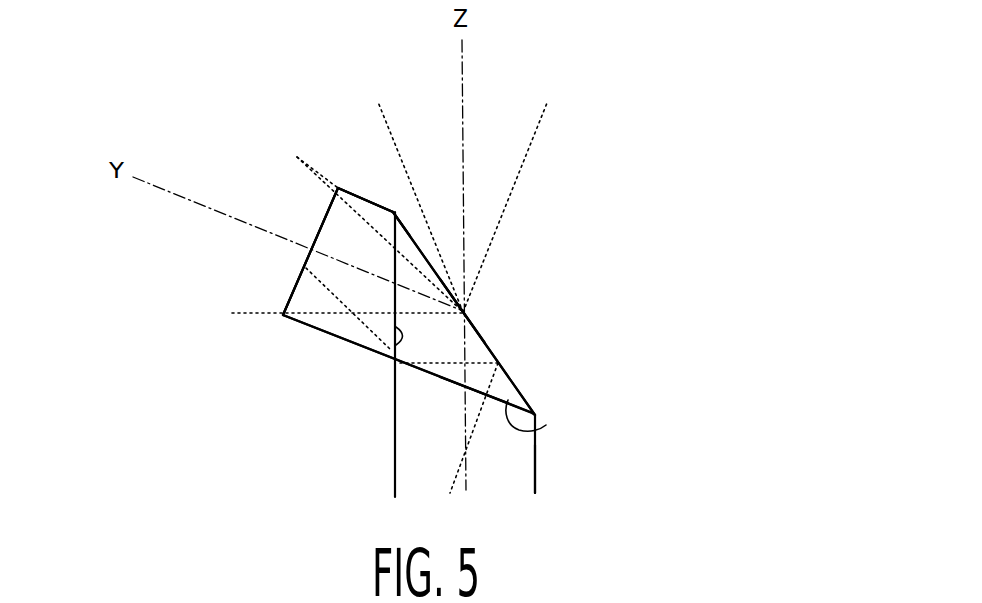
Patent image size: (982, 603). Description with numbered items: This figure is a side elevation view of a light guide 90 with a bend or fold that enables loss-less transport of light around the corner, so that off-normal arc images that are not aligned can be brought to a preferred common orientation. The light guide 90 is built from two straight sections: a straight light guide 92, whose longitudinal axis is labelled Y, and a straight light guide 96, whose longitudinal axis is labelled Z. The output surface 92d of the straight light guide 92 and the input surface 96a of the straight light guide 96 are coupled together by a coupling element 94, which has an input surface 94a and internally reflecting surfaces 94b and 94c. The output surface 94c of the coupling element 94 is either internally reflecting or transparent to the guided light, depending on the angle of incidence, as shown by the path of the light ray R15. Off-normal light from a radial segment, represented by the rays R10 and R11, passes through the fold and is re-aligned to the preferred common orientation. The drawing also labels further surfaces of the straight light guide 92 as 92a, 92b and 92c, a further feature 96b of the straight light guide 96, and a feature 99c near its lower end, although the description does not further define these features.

The light guide 90 is at (168, 114).
The straight light guide 92 is at (283, 272).
The first surface of prism 92a is at (312, 252).
The second surface of prism 92b is at (348, 341).
The third surface of prism 92c is at (357, 190).
The output surface 92d is at (390, 222).
The coupling element 94 is at (517, 348).
The input surface 94a is at (397, 356).
The internally reflecting surface 94b is at (478, 328).
The output surface 94c is at (508, 400).
The straight light guide 96 is at (555, 490).
The input surface 96a is at (546, 425).
The support wall 96b is at (395, 465).
The side wall 99c is at (537, 460).
The light ray R10 is at (263, 317).
The light ray R11 is at (313, 173).
The light ray R15 is at (333, 288).